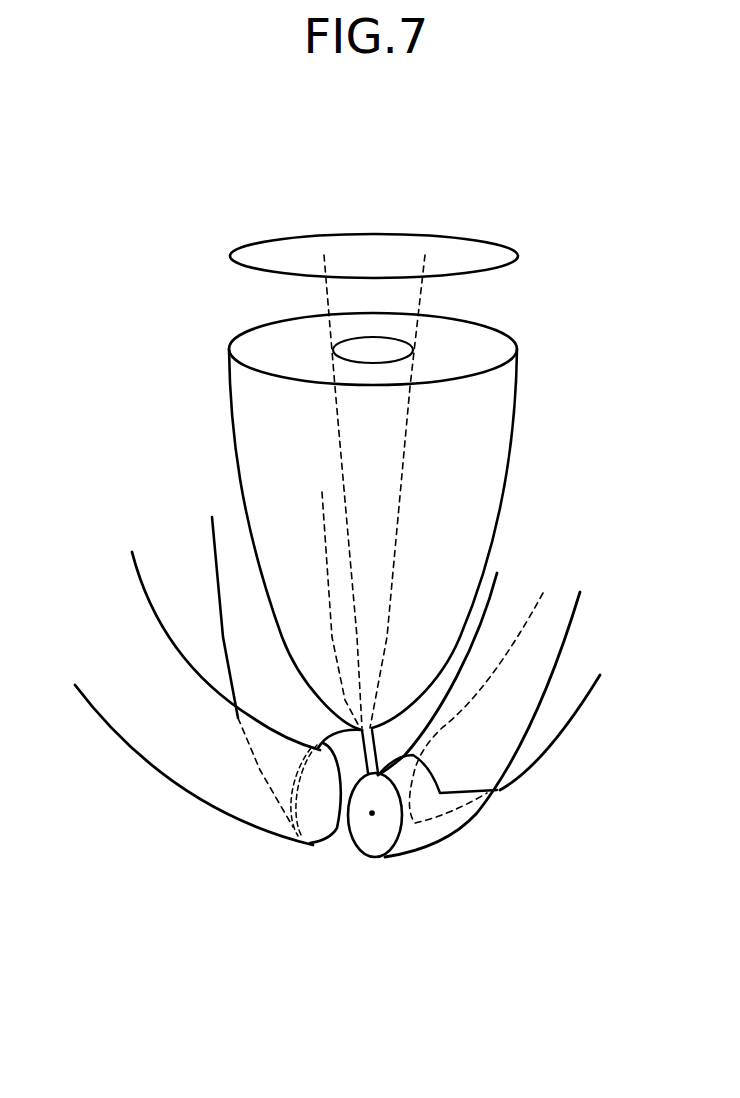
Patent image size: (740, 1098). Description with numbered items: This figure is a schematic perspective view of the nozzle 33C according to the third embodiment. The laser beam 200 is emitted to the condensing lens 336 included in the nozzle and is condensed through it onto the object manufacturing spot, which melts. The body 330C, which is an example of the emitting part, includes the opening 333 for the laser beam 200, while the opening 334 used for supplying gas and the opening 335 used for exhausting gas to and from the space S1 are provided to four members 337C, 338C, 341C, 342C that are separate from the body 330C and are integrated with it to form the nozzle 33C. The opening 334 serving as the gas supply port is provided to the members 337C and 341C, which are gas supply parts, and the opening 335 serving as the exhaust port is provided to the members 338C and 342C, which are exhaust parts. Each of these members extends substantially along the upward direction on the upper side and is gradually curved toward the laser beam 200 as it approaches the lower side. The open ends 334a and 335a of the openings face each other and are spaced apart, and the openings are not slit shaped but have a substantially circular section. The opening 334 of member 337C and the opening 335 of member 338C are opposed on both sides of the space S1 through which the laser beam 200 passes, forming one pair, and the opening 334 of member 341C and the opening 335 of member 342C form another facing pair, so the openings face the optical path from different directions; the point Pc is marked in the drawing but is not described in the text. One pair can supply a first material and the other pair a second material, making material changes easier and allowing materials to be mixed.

The condensing lens 336 is at (473, 250).
The nozzle 33C is at (539, 232).
The body 330C is at (528, 383).
The opening 333 is at (388, 350).
The laser beam 200 is at (325, 297).
The member 338C is at (227, 552).
The opening 335 is at (238, 585).
The member 342C is at (112, 730).
The open end 335a is at (313, 860).
The open end 334a is at (490, 793).
The member 341C is at (548, 740).
The opening 334 is at (582, 682).
The member 337C is at (442, 833).
The center point Pc is at (372, 813).
The space S1 is at (345, 858).